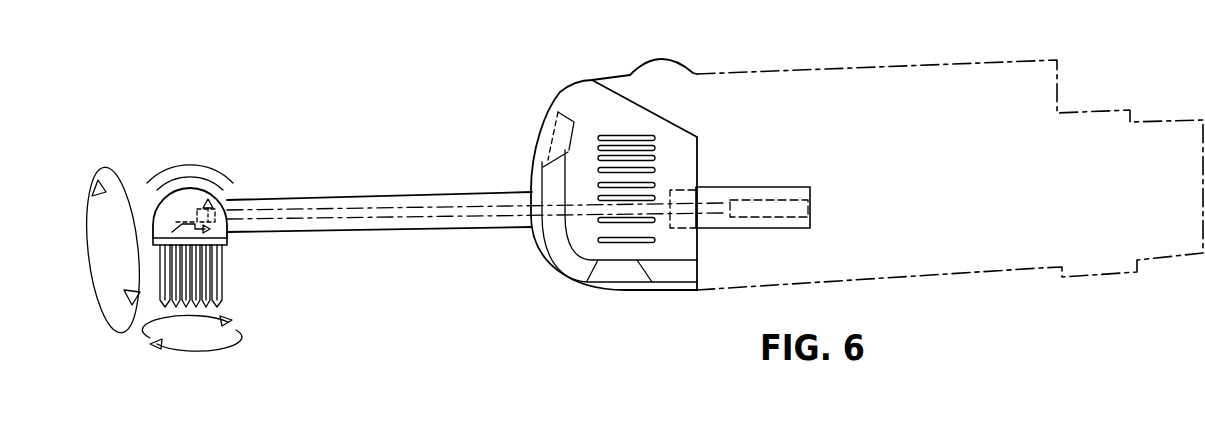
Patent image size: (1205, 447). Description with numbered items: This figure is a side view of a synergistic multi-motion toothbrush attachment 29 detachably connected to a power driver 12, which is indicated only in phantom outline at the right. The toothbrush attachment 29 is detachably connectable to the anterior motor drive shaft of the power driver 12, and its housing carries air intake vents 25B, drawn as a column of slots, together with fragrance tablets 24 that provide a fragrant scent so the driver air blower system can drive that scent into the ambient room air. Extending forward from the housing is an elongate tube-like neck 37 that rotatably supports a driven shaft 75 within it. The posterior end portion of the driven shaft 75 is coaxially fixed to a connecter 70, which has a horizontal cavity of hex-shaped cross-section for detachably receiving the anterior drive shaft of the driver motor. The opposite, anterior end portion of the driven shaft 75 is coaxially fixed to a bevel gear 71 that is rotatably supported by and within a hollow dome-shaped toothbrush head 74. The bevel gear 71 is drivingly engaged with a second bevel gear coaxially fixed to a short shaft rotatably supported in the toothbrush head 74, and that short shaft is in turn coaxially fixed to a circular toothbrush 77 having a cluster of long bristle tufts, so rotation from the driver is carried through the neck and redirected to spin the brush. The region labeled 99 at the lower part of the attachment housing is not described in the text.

The power driver 12 is at (770, 72).
The synergistic multi-motion toothbrush attachment 29 is at (543, 114).
The inner chamber wall 99 is at (606, 294).
The fragrance tablets 24 is at (574, 118).
The air intake vents 25B is at (643, 133).
The connecter 70 is at (767, 187).
The driven shaft 75 is at (406, 206).
The elongate tube-like neck 37 is at (447, 233).
The hollow dome-shaped toothbrush head 74 is at (225, 198).
The bevel gear 71 is at (207, 200).
The circular toothbrush 77 is at (227, 242).